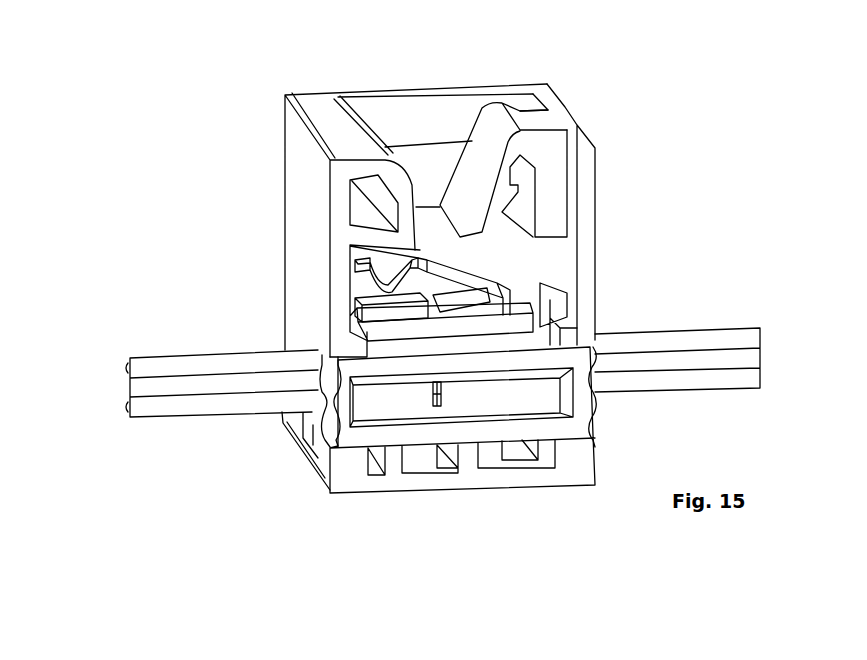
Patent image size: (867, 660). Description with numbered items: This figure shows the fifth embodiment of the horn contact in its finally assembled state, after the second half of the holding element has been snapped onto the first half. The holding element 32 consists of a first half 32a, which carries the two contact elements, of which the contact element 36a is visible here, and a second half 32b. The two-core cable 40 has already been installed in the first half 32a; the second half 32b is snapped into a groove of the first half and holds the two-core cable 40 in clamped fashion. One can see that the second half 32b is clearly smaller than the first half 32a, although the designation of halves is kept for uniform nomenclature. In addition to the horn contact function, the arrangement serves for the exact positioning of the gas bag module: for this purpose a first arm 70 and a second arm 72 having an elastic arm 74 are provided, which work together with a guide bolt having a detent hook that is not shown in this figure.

The holding element 32 is at (602, 241).
The first half of the holding element 32a is at (302, 253).
The second half of the holding element 32b is at (432, 437).
The contact element 36a is at (608, 276).
The two-core cable 40 is at (720, 328).
The first arm 70 is at (392, 178).
The second arm 72 is at (556, 178).
The elastic arm 74 is at (475, 148).